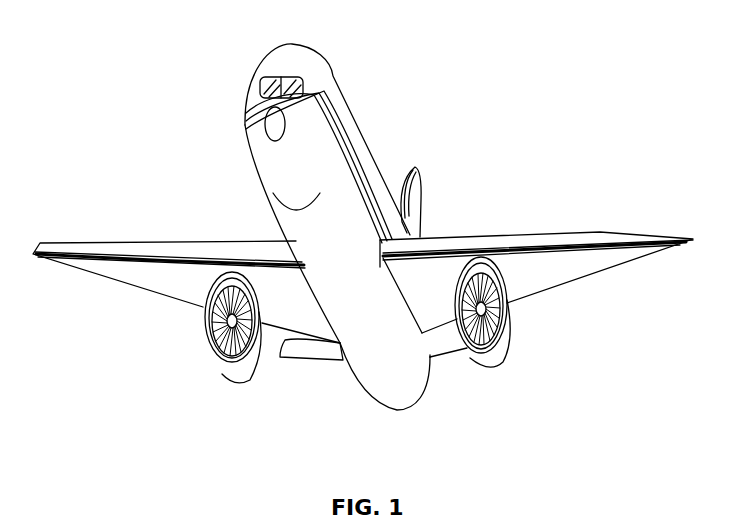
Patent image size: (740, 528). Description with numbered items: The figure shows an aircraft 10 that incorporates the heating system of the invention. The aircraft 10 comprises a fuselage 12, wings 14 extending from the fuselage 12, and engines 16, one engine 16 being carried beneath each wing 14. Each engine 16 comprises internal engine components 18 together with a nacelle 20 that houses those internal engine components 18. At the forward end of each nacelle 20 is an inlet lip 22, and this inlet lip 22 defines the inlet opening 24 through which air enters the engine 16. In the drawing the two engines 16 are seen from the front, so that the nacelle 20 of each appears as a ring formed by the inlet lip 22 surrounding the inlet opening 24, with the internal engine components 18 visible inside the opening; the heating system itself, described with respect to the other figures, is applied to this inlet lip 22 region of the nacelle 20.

The aircraft 10 is at (146, 38).
The fuselage 12 is at (347, 123).
The wings 14 is at (143, 247).
The engines 16 is at (252, 349).
The internal engine components 18 is at (215, 360).
The nacelle 20 is at (243, 377).
The inlet lip 22 is at (204, 316).
The inlet opening 24 is at (213, 345).